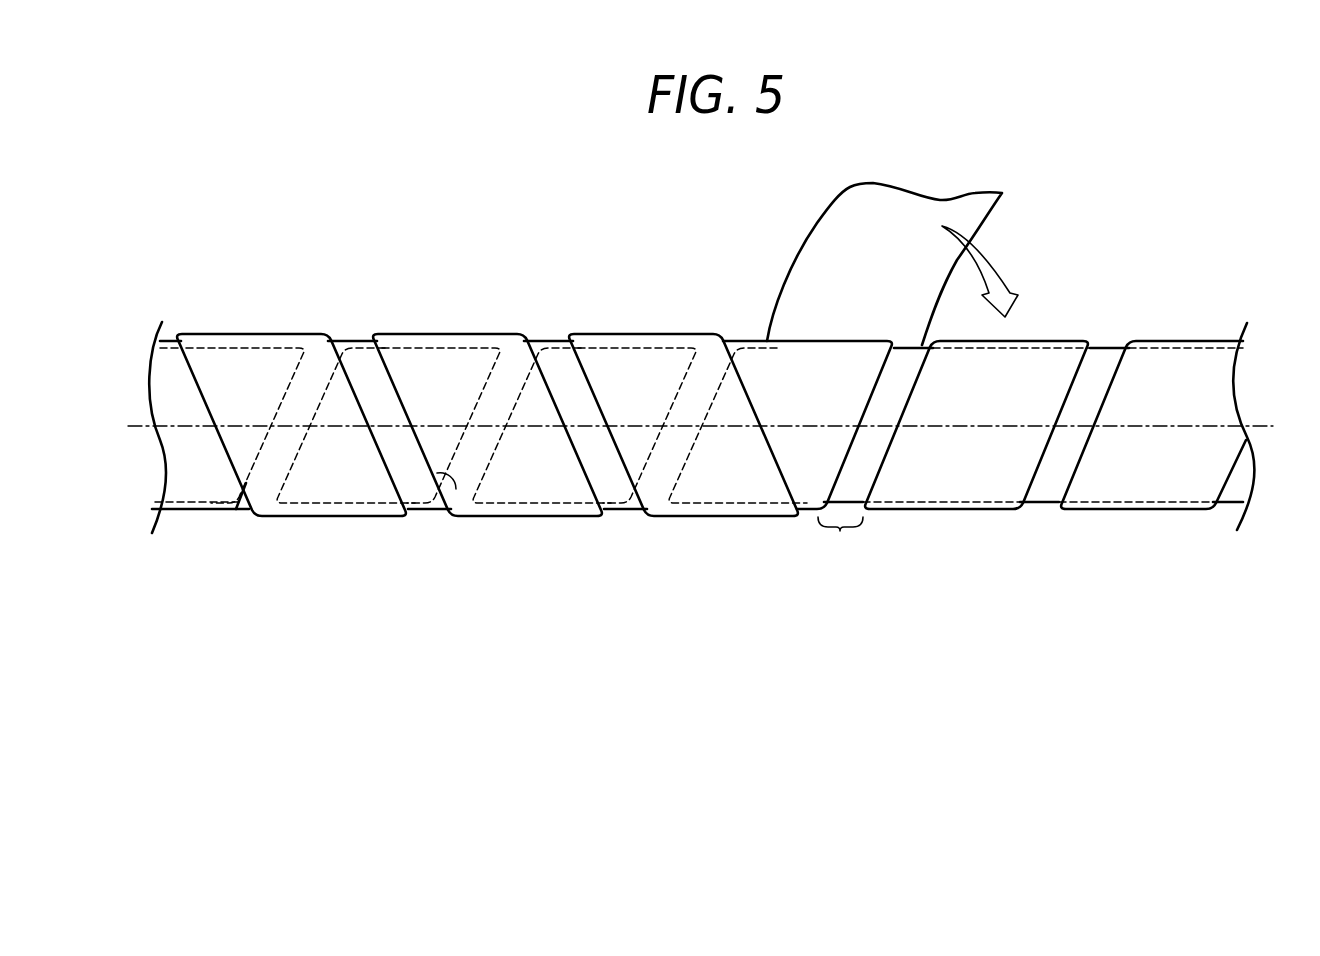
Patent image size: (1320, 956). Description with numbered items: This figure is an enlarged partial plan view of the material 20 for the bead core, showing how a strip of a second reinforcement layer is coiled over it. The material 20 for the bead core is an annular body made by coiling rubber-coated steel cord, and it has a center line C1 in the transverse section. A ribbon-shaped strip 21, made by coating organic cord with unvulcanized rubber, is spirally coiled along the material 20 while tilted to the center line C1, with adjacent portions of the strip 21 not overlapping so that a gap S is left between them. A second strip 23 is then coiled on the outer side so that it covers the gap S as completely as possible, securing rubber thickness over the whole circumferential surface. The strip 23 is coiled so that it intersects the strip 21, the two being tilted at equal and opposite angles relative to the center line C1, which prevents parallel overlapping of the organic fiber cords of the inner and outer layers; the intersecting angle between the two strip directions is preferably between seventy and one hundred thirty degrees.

The material for the bead core 20 is at (870, 447).
The strip 21 is at (965, 473).
The strip 23 is at (730, 472).
The gap S is at (840, 538).
The center line C1 is at (722, 426).